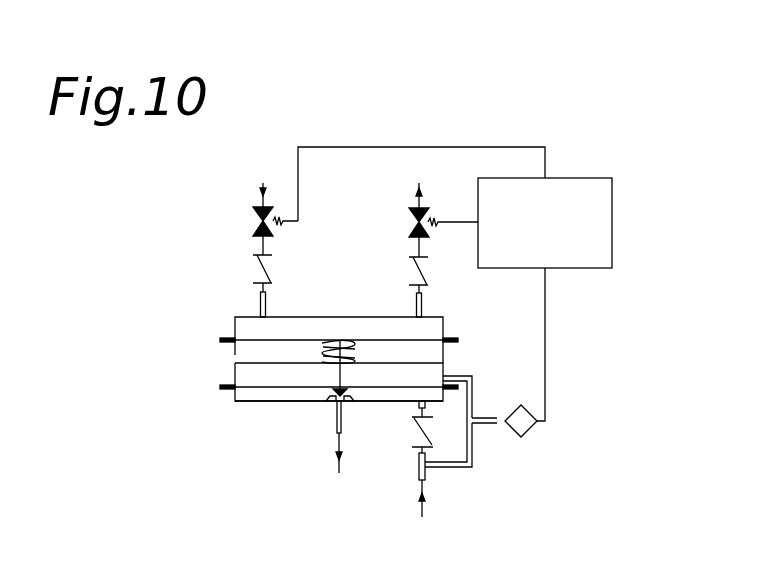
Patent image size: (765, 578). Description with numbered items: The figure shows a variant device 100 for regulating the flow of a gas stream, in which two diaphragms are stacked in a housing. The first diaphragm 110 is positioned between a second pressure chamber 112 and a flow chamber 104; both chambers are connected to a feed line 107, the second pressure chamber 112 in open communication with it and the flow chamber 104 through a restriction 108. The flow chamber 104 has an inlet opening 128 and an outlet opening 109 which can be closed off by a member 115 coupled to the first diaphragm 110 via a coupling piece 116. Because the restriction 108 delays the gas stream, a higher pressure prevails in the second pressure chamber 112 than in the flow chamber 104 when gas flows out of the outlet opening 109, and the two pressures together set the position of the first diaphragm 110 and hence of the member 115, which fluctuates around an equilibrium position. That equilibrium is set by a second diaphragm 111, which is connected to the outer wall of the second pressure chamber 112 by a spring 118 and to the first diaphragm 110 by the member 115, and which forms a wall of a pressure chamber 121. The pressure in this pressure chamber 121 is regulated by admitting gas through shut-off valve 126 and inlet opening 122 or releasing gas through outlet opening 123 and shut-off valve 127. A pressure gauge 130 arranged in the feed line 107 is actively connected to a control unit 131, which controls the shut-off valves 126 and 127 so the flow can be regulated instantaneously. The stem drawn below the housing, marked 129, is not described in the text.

The device 100 is at (447, 310).
The flow chamber 104 is at (377, 402).
The feed line 107 is at (427, 475).
The restriction 108 is at (430, 430).
The outlet opening 109 is at (422, 352).
The first diaphragm 110 is at (234, 401).
The second diaphragm 111 is at (234, 318).
The second pressure chamber 112 is at (250, 373).
The member 115 is at (328, 399).
The coupling piece 116 is at (328, 373).
The spring 118 is at (322, 343).
The pressure chamber 121 is at (347, 327).
The inlet opening 122 is at (258, 315).
The outlet opening 123 is at (417, 310).
The shut-off valve 126 is at (260, 222).
The shut-off valve 127 is at (413, 224).
The inlet opening 128 is at (430, 401).
The outlet stem 129 is at (333, 394).
The pressure gauge 130 is at (528, 428).
The control unit 131 is at (590, 212).